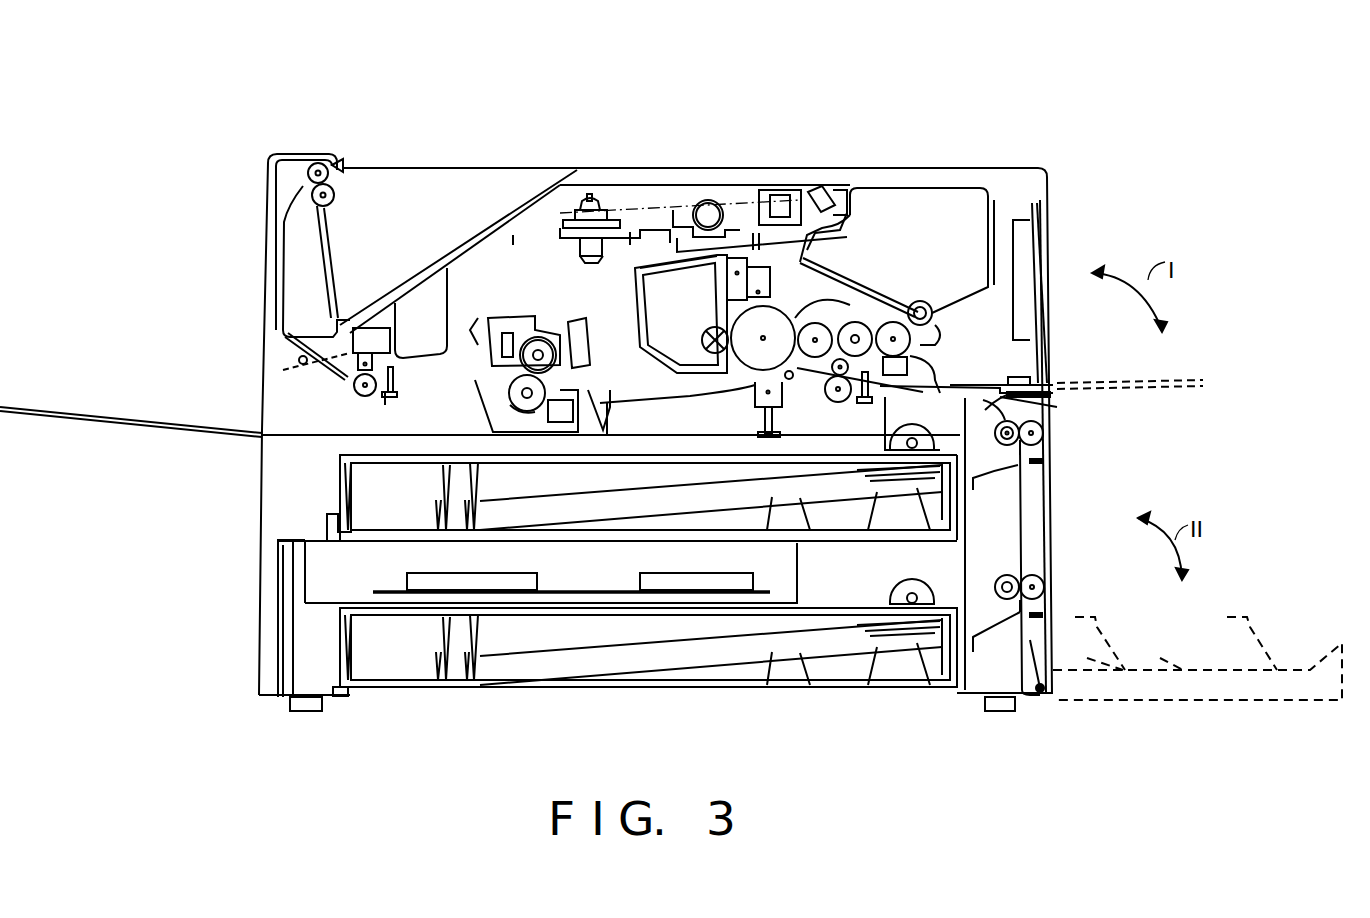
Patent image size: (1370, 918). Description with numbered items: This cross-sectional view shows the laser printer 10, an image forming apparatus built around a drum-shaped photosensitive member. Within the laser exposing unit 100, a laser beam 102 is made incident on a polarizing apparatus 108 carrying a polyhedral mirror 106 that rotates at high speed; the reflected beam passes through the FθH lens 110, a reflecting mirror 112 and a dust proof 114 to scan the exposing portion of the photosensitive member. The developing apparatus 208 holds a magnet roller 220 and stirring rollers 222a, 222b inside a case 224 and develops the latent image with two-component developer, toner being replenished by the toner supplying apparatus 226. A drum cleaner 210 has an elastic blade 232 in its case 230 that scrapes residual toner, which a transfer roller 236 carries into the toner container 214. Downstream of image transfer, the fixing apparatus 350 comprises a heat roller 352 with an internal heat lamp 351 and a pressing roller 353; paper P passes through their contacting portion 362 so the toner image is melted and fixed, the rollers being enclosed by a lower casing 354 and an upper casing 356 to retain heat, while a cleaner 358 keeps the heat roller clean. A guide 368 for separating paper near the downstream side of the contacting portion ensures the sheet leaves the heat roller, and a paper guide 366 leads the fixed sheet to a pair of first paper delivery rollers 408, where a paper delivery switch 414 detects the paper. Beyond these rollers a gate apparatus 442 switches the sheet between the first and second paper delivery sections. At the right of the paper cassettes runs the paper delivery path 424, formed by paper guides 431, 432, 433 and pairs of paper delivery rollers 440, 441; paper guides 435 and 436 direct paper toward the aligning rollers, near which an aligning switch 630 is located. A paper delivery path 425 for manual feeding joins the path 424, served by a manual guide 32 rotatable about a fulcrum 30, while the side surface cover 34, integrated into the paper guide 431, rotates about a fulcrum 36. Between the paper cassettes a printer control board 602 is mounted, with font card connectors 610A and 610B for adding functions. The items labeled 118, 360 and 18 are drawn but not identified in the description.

The laser printer 10 is at (693, 110).
The polyhedral mirror 106 is at (512, 235).
The polarizing apparatus 108 is at (598, 200).
The drum cleaner 210 is at (680, 262).
The laser exposing unit 100 is at (698, 297).
The lamp 118 is at (707, 200).
The FθH lens 110 is at (790, 195).
The laser beam 102 is at (757, 243).
The reflecting mirror 112 is at (818, 196).
The dust proof 114 is at (833, 200).
The toner supplying apparatus 226 is at (965, 200).
The magnet roller 220 is at (812, 300).
The developing apparatus 208 is at (818, 323).
The stirring roller 222a is at (924, 305).
The case 224 is at (935, 325).
The stirring roller 222b is at (933, 342).
The paper guide 436 is at (990, 384).
The fulcrum 30 is at (1030, 383).
The paper delivery path 425 is at (1127, 384).
The manual guide 32 is at (1195, 380).
The paper guide 435 is at (1020, 414).
The paper delivery path 424 is at (1046, 431).
The pair of paper delivery rollers 440 is at (993, 425).
The paper guide 432 is at (1035, 450).
The paper guide 431 is at (1022, 500).
The paper P is at (933, 488).
The pair of paper delivery rollers 441 is at (285, 343).
The gate apparatus 442 is at (285, 370).
The paper guide 433 is at (1050, 627).
The side surface cover 34 is at (1310, 668).
The fulcrum 36 is at (1040, 693).
The fixing apparatus 350 is at (478, 318).
The heat lamp 351 is at (470, 330).
The heat roller 352 is at (497, 318).
The cleaner 358 is at (500, 330).
The roller 360 is at (552, 337).
The toner container 214 is at (650, 293).
The elastic blade 232 is at (656, 320).
The transfer roller 236 is at (703, 340).
The case 230 is at (584, 345).
The upper casing 356 is at (592, 372).
The lower casing 354 is at (592, 432).
The contacting portion 362 is at (540, 412).
The pressing roller 353 is at (527, 425).
The guide for separating paper 368 is at (490, 370).
The pair of first paper delivery rollers 408 is at (362, 396).
The paper delivery switch 414 is at (392, 397).
The paper guide 366 is at (400, 385).
The aligning switch 630 is at (862, 400).
The cassette frame 18 is at (325, 557).
The printer control board 602 is at (375, 583).
The font card connector 610A is at (505, 583).
The font card connector 610B is at (693, 583).